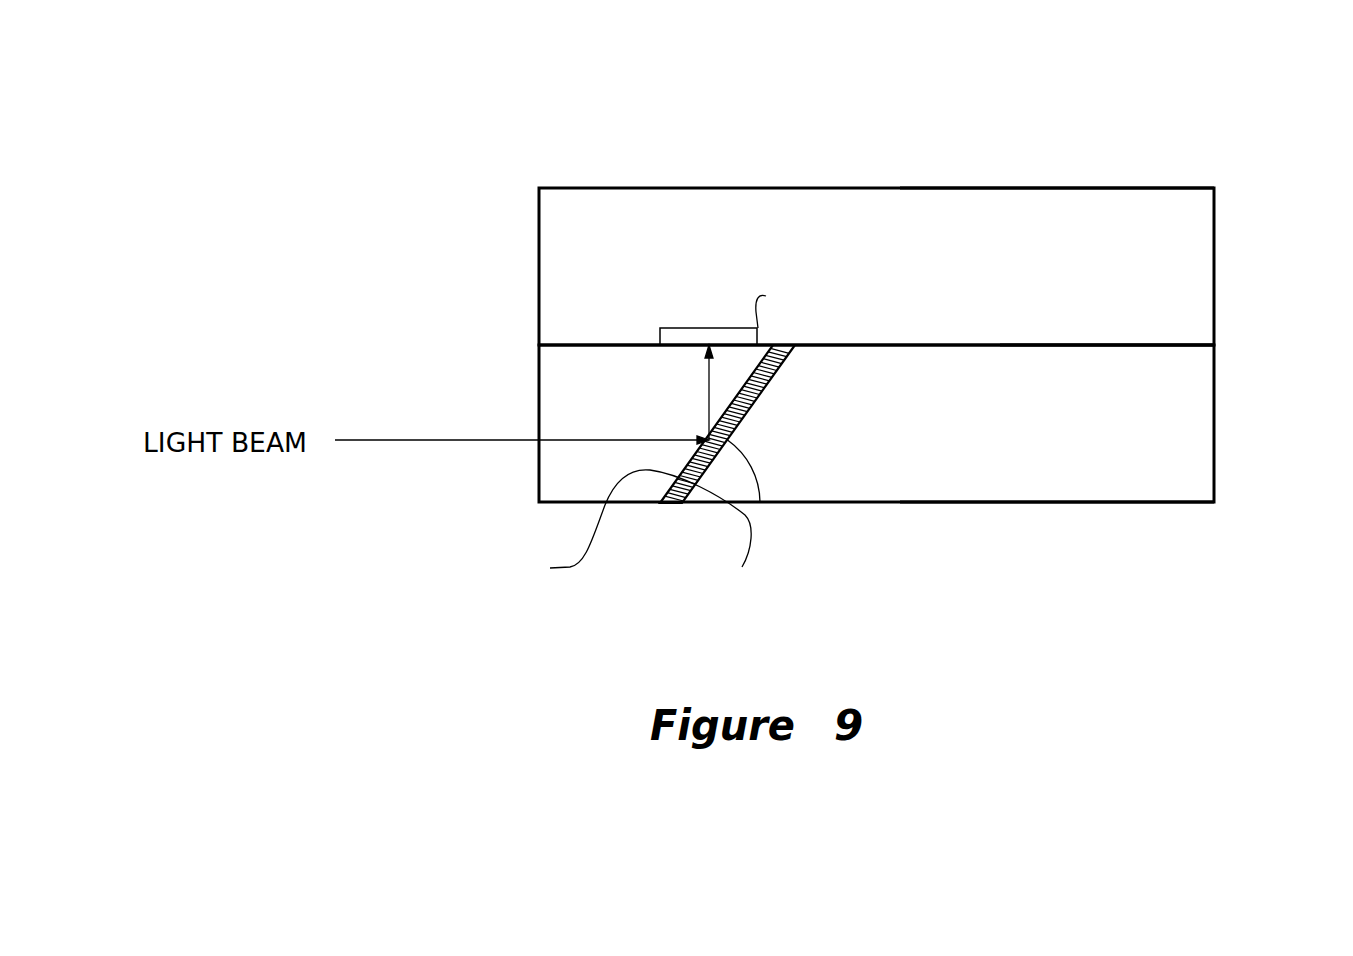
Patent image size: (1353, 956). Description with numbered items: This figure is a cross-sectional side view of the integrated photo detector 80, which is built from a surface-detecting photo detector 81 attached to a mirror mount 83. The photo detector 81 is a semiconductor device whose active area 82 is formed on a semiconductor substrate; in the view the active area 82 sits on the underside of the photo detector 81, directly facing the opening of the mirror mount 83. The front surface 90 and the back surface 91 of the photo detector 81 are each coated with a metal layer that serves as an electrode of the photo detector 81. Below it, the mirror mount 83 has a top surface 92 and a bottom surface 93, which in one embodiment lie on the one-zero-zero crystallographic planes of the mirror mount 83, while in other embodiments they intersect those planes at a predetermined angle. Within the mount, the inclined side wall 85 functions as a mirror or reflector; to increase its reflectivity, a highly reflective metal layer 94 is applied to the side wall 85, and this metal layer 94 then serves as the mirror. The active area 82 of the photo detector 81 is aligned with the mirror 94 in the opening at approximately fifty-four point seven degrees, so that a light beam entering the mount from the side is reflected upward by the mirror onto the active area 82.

The integrated photo detector 80 is at (1203, 130).
The photo detector 81 is at (1215, 234).
The active area 82 is at (692, 328).
The mirror mount 83 is at (1216, 413).
The side wall 85 is at (777, 377).
The front surface 90 is at (1063, 187).
The back surface 91 is at (1160, 344).
The top surface 92 is at (1088, 345).
The bottom surface 93 is at (1050, 503).
The metal layer 94 is at (670, 513).